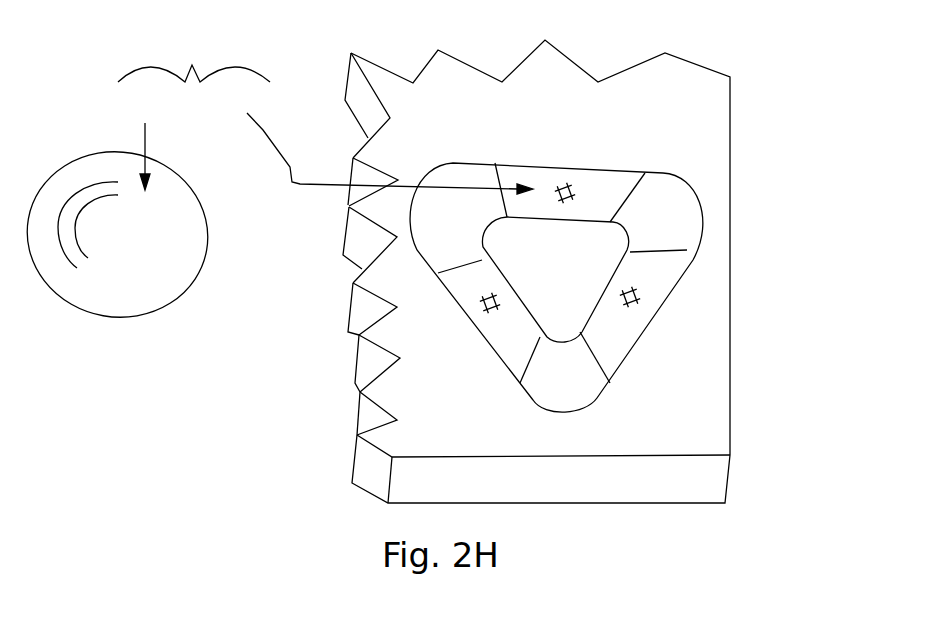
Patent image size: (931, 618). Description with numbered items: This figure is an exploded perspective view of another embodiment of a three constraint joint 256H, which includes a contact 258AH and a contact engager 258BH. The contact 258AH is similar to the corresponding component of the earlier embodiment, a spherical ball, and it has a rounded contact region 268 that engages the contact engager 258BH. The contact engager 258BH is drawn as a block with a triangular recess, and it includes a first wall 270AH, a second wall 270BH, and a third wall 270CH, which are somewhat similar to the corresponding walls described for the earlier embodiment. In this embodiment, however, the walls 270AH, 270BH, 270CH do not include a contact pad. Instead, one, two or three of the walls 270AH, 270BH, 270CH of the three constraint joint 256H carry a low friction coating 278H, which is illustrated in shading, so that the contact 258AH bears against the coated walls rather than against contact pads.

The three constraint joint 256H is at (194, 57).
The contact 258AH is at (159, 138).
The contact engager 258BH is at (372, 140).
The contact region 268 is at (117, 320).
The first wall 270AH is at (617, 185).
The second wall 270BH is at (660, 263).
The third wall 270CH is at (522, 345).
The low friction coating 278H is at (640, 297).